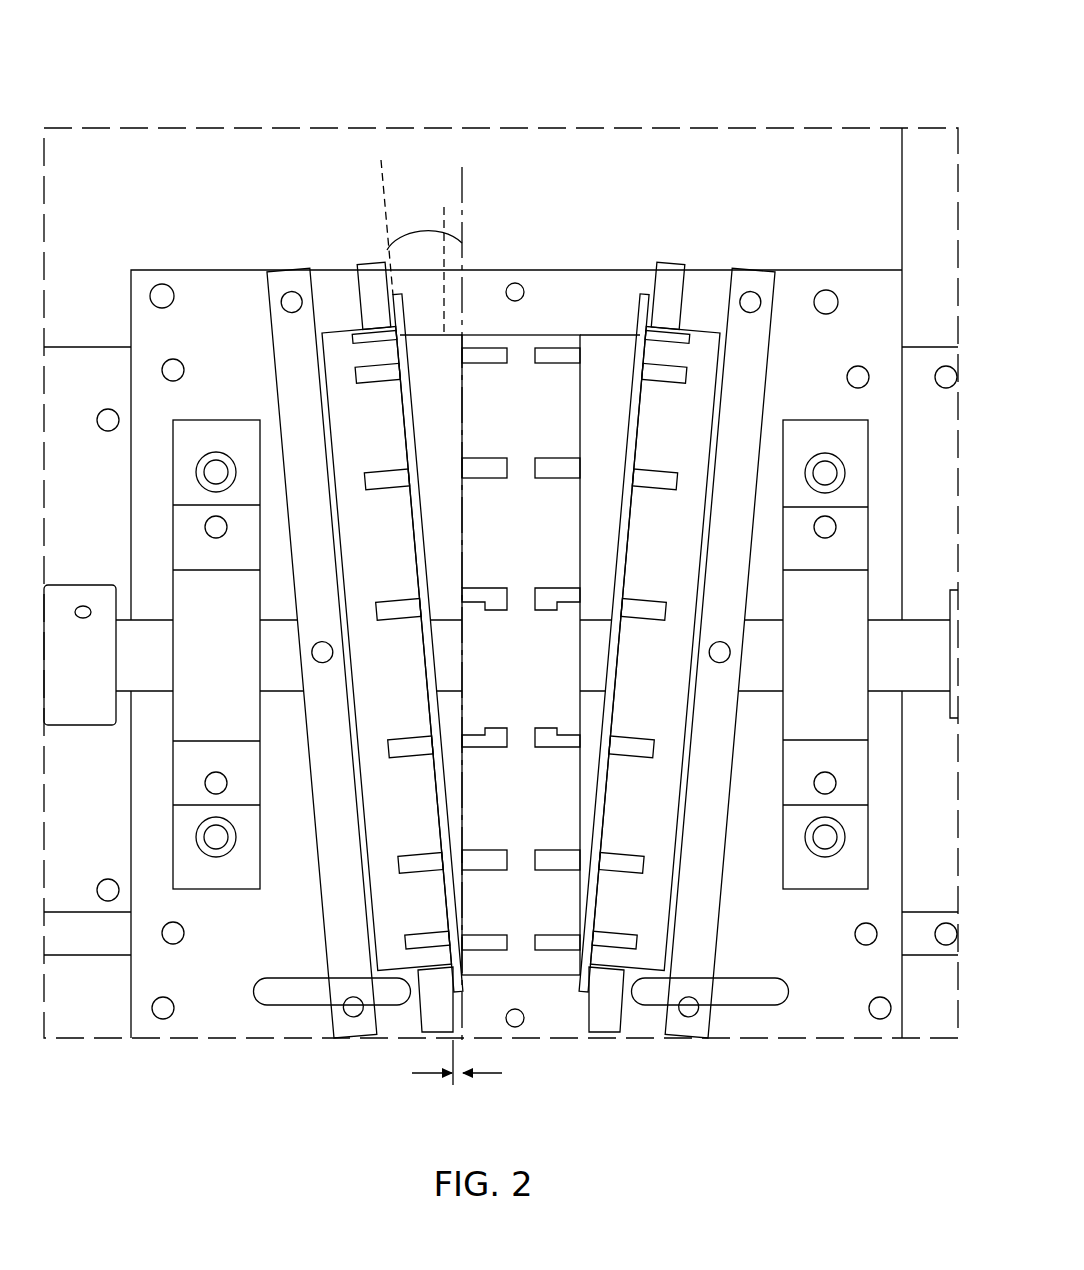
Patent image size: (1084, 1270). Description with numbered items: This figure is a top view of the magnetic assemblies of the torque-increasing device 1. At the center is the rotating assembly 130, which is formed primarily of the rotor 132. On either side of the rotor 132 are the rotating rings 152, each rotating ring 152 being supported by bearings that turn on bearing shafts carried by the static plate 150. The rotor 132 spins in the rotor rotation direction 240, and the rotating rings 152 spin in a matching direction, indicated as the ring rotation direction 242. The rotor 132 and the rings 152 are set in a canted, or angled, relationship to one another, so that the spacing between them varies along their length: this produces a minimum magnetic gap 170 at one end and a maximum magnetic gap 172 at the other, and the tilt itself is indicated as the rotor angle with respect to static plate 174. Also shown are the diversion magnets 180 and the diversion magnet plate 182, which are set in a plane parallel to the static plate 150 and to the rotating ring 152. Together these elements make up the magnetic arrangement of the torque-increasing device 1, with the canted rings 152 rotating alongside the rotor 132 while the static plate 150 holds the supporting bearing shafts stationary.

The torque-increasing device 1 is at (722, 70).
The rotating assembly 130 is at (553, 306).
The rotor 132 is at (503, 423).
The static plate 150 is at (345, 955).
The rotating ring 152 is at (349, 443).
The minimum magnetic gap 170 is at (457, 1077).
The maximum magnetic gap 172 is at (447, 302).
The rotor angle with respect to static plate 174 is at (443, 207).
The diversion magnets 180 is at (386, 264).
The diversion magnet plate 182 is at (357, 300).
The rotor rotation direction 240 is at (513, 576).
The ring rotation direction 242 is at (385, 588).